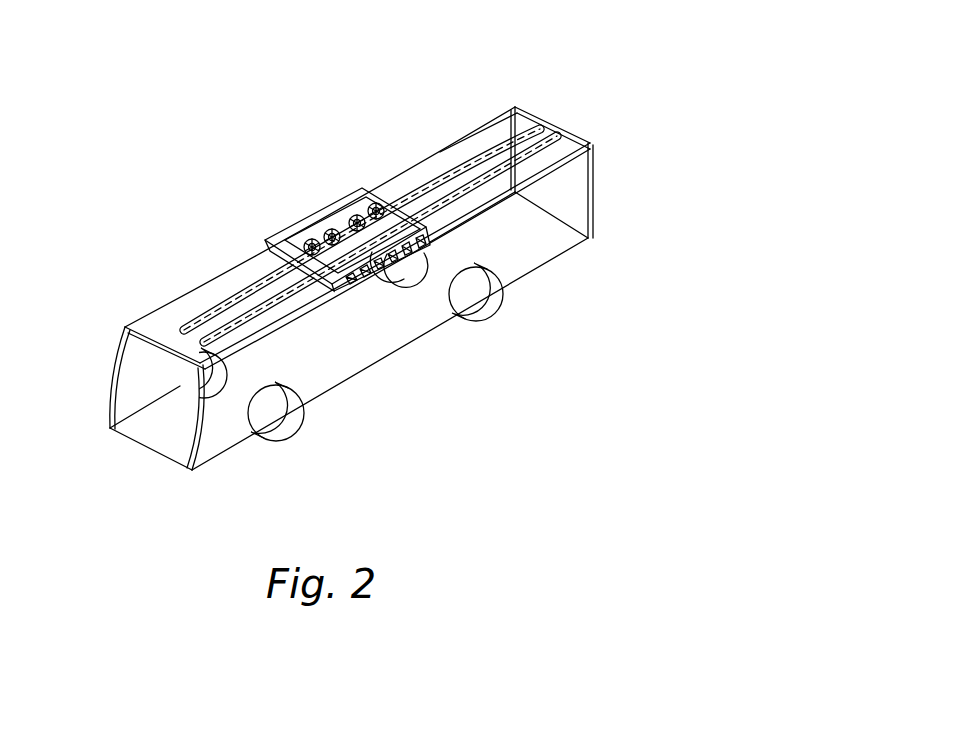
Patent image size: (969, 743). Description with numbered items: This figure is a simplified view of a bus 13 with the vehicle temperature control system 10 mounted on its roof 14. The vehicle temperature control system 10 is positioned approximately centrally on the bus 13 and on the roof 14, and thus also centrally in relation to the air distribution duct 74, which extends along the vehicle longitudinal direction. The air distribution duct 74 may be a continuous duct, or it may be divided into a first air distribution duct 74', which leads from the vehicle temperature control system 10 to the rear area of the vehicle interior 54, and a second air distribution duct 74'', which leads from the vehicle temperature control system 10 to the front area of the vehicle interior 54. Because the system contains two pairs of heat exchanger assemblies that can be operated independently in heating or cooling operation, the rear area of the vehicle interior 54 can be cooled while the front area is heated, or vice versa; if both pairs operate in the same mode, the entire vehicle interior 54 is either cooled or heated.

The bus 13 is at (135, 258).
The roof 14 is at (447, 158).
The vehicle temperature control system 10 is at (310, 215).
The air distribution duct 74 is at (370, 187).
The first air distribution duct 74' is at (445, 236).
The second air distribution duct 74'' is at (362, 229).
The vehicle interior 54 is at (512, 245).